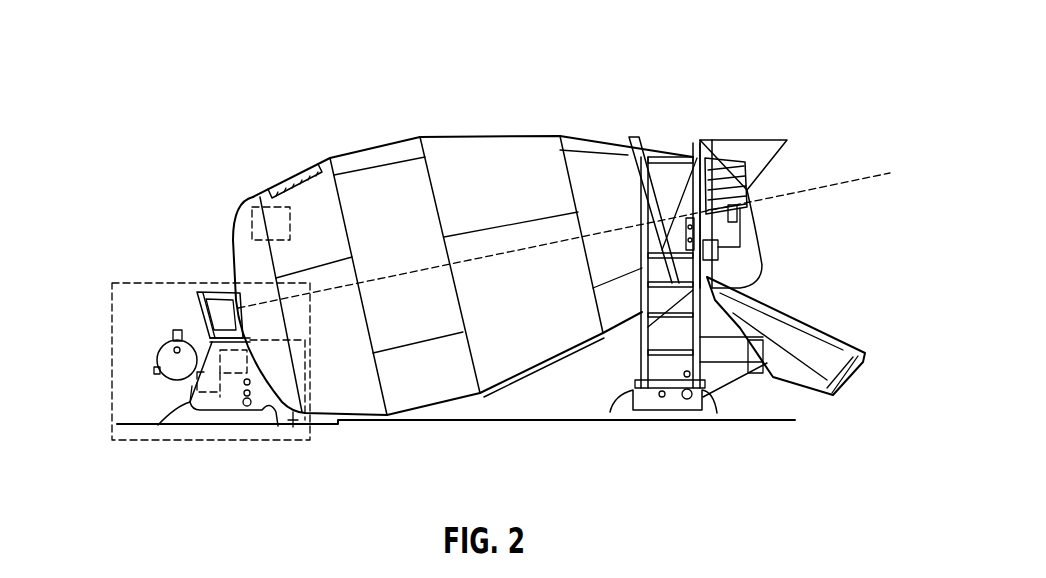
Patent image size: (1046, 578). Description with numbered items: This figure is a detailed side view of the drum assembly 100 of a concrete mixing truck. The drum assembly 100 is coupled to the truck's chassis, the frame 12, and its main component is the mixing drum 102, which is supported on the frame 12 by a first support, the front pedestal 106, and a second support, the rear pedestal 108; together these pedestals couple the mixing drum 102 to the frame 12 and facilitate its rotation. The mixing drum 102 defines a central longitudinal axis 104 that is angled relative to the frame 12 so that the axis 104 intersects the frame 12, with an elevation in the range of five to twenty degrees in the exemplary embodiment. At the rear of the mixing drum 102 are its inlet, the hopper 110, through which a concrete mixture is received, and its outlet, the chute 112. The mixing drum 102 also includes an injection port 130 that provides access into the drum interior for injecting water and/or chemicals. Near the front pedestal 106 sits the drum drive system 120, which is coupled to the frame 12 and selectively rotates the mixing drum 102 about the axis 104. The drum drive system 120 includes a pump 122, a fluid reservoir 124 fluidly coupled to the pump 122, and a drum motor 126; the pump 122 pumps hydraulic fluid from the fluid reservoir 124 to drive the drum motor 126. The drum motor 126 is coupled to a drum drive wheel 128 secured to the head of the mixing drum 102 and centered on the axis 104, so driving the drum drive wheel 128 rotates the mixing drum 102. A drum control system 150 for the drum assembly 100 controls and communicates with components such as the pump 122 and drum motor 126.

The drum assembly 100 is at (258, 105).
The frame 12 is at (500, 420).
The mixing drum 102 is at (515, 147).
The axis 104 is at (838, 173).
The front pedestal 106 is at (195, 402).
The rear pedestal 108 is at (676, 405).
The hopper 110 is at (742, 140).
The chute 112 is at (838, 345).
The drum drive system 120 is at (133, 280).
The pump 122 is at (190, 387).
The fluid reservoir 124 is at (160, 362).
The drum motor 126 is at (293, 426).
The drum drive wheel 128 is at (198, 316).
The injection port 130 is at (260, 212).
The drum control system 150 is at (240, 367).